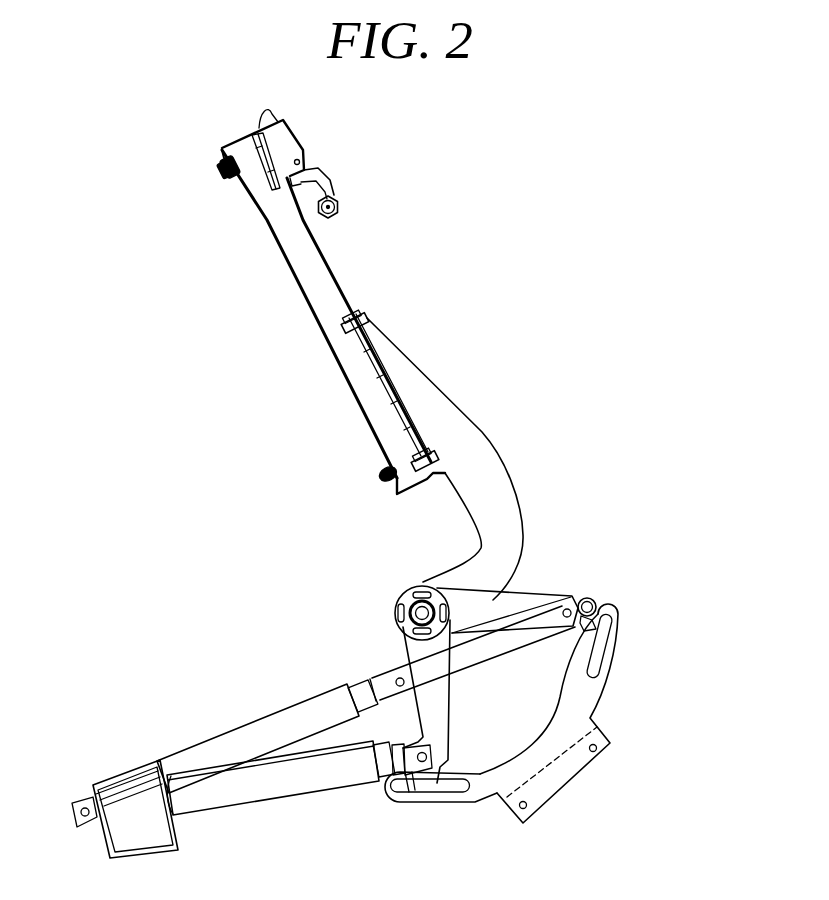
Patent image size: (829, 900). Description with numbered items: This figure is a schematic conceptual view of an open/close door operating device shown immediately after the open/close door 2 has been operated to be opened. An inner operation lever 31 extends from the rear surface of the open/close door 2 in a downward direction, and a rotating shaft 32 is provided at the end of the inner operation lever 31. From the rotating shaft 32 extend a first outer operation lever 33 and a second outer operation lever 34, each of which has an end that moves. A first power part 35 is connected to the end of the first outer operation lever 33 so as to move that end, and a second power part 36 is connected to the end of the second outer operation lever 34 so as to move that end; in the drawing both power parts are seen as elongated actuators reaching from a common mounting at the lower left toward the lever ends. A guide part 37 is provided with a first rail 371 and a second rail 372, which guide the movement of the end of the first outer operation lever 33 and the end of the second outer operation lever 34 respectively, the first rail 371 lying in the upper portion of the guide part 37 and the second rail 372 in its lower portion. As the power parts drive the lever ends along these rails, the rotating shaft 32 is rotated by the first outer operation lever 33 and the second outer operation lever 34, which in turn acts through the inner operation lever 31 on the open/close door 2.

The open/close door 2 is at (362, 268).
The inner operation lever 31 is at (507, 527).
The rotating shaft 32 is at (403, 593).
The first outer operation lever 33 is at (547, 587).
The second outer operation lever 34 is at (417, 649).
The first power part 35 is at (230, 750).
The second power part 36 is at (275, 785).
The guide part 37 is at (558, 742).
The first rail 371 is at (605, 650).
The second rail 372 is at (437, 795).